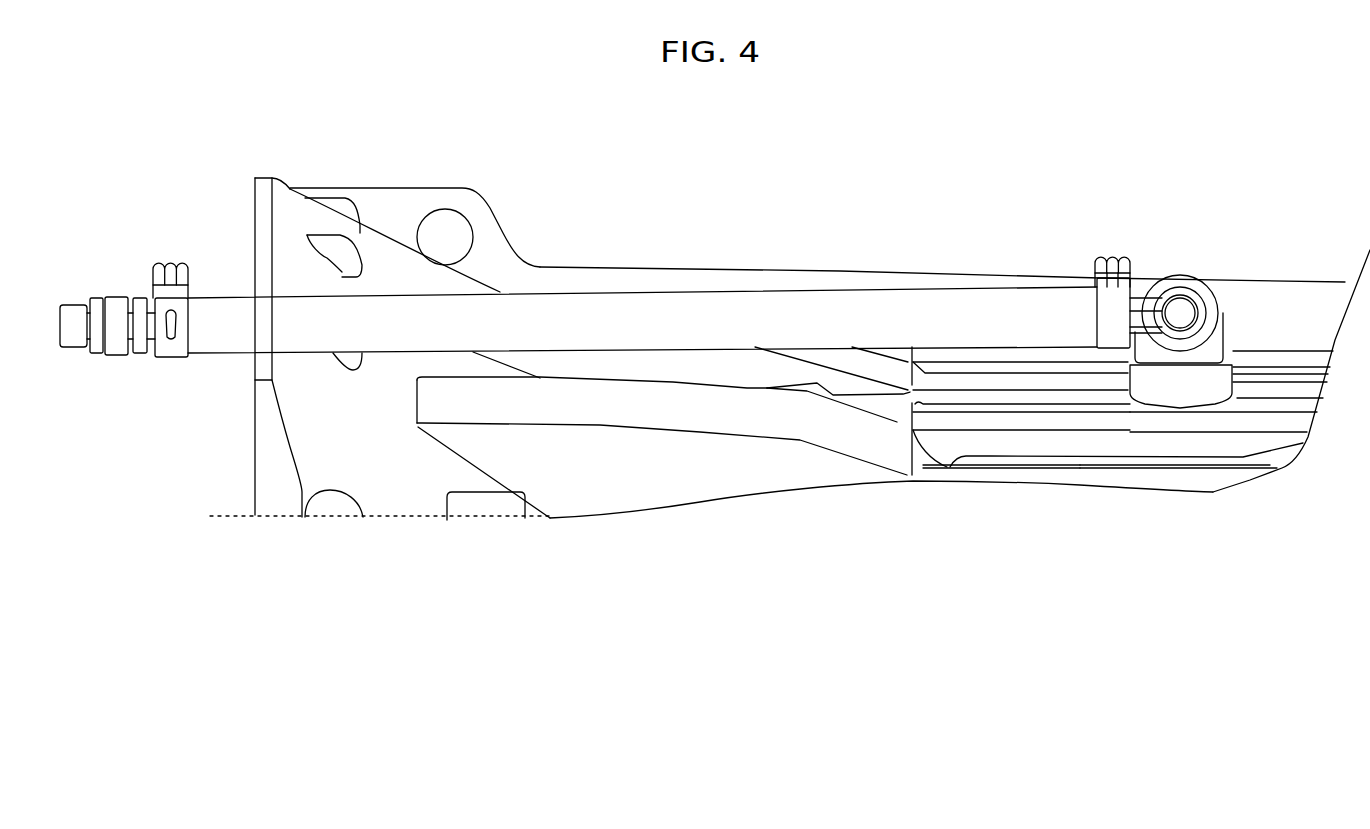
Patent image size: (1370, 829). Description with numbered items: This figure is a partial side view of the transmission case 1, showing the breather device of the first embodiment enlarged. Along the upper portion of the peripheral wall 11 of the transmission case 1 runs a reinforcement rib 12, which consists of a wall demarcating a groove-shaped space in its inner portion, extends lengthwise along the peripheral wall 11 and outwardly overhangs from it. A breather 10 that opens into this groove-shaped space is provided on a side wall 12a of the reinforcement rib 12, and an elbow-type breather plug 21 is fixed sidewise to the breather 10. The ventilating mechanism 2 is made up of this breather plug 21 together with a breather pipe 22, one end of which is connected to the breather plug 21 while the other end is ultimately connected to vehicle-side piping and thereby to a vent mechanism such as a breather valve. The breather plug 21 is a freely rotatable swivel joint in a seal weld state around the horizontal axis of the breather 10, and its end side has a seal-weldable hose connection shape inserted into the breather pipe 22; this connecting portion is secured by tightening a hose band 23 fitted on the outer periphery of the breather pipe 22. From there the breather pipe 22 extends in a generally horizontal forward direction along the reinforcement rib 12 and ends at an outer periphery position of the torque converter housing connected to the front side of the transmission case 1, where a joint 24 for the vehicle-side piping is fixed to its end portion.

The transmission case 1 is at (257, 438).
The ventilating mechanism 2 is at (578, 287).
The breather 10 is at (1190, 288).
The peripheral wall 11 is at (1037, 357).
The reinforcement rib 12 is at (850, 268).
The side wall 12a is at (1245, 307).
The breather plug 21 is at (1190, 318).
The breather pipe 22 is at (675, 313).
The hose band 23 is at (1097, 300).
The joint 24 is at (117, 298).